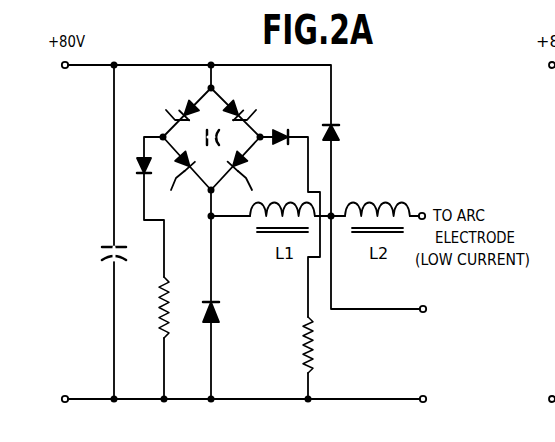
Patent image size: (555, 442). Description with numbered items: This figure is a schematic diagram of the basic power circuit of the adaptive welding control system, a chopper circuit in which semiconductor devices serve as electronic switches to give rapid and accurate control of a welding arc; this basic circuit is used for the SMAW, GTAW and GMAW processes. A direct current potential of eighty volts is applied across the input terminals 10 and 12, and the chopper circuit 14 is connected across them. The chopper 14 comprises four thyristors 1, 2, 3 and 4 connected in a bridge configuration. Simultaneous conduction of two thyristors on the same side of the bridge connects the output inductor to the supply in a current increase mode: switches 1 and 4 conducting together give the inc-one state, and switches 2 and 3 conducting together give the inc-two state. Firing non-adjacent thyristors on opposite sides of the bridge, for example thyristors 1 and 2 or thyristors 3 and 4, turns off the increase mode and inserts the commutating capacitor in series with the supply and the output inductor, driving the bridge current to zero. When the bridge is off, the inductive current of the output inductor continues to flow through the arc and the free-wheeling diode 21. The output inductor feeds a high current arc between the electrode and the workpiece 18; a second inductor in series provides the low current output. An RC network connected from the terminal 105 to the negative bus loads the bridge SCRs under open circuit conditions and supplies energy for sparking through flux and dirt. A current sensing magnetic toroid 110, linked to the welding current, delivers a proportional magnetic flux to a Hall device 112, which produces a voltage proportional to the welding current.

The thyristor 1 is at (182, 108).
The thyristor 2 is at (241, 165).
The thyristor 3 is at (241, 108).
The thyristor 4 is at (181, 163).
The input terminal 10 is at (64, 69).
The input terminal 12 is at (66, 395).
The chopper circuit 14 is at (203, 77).
The workpiece 18 is at (420, 395).
The free-wheeling diode 21 is at (221, 310).
The terminal 105 is at (420, 305).
The current sensing magnetic toroid 110 is at (419, 212).
The Hall device 112 is at (337, 133).